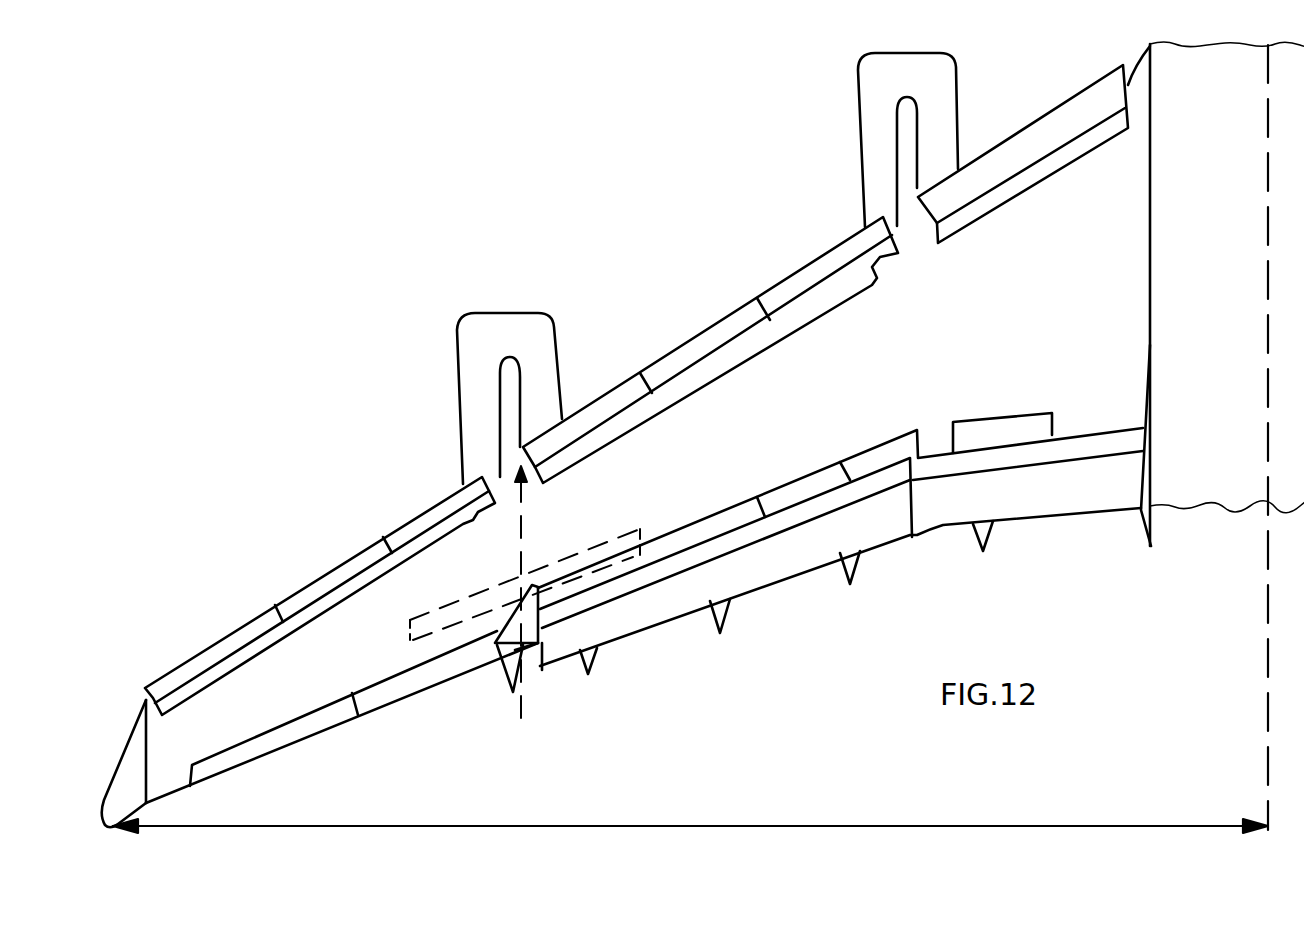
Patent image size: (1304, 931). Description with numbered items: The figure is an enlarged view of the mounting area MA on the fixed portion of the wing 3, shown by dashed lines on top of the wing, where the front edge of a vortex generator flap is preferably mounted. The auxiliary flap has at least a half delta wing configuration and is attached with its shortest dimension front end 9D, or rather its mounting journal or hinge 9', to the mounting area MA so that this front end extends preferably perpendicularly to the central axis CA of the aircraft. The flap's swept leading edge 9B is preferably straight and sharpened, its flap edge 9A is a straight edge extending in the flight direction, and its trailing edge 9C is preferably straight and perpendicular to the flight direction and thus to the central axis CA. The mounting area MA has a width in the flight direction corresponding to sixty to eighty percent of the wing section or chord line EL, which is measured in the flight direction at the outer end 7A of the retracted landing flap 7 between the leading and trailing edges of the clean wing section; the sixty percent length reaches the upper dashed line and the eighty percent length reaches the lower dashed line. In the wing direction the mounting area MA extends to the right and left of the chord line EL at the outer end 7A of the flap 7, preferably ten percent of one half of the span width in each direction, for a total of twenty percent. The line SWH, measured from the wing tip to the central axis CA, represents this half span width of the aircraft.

The wing 3 is at (732, 393).
The landing flap 7 is at (765, 577).
The outer end of landing flap 7A is at (527, 668).
The mounting journal or hinge 9' is at (338, 596).
The flap edge 9A is at (542, 618).
The leading edge 9B is at (520, 603).
The trailing edge 9C is at (505, 672).
The front end 9D is at (532, 584).
The wing section or chord line EL is at (523, 518).
The mounting area MA is at (633, 538).
The central axis CA is at (1268, 417).
The half span width line SWH is at (277, 824).